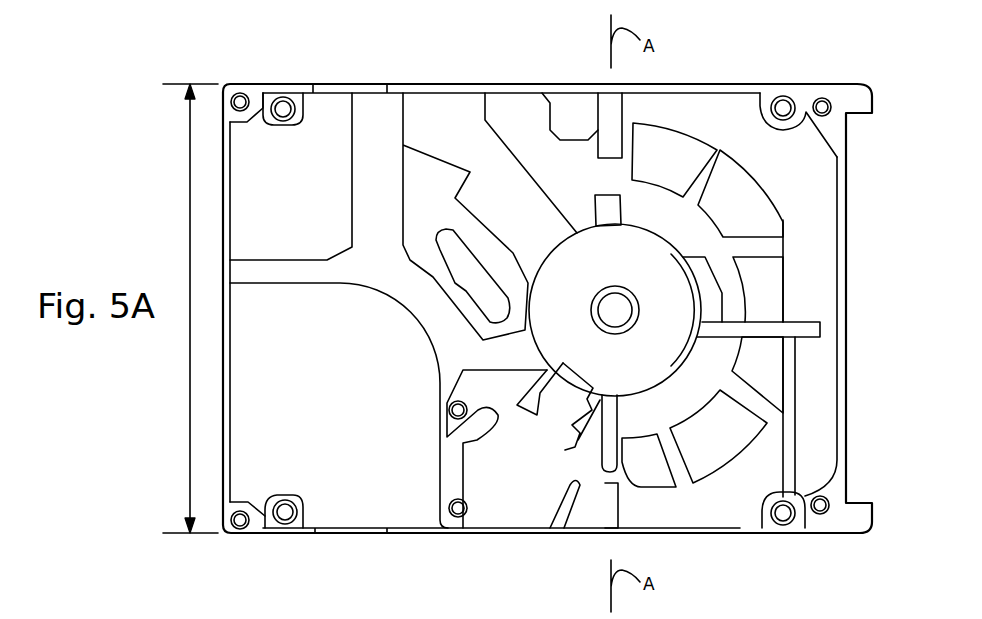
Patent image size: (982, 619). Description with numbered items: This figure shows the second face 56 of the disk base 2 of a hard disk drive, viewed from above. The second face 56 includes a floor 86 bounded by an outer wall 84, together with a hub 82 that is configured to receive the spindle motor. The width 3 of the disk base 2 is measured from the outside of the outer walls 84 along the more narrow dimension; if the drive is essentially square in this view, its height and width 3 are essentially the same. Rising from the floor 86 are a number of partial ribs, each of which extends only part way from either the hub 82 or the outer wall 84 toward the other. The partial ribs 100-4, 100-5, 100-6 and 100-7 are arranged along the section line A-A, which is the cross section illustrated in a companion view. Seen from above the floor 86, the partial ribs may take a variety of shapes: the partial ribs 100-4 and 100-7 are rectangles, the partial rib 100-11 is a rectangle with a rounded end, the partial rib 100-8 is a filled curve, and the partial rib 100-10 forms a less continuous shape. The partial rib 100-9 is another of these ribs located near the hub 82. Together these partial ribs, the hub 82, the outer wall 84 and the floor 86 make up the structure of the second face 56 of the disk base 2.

The disk base 2 is at (198, 48).
The outer wall 84 is at (417, 84).
The width 3 is at (188, 420).
The second face 56 is at (380, 396).
The floor 86 is at (363, 423).
The hub 82 is at (615, 310).
The partial rib 100-4 is at (614, 114).
The partial rib 100-5 is at (612, 205).
The partial rib 100-6 is at (673, 455).
The partial rib 100-7 is at (618, 495).
The partial rib 100-8 is at (483, 422).
The partial rib 100-9 is at (530, 400).
The partial rib 100-10 is at (577, 443).
The partial rib 100-11 is at (556, 500).